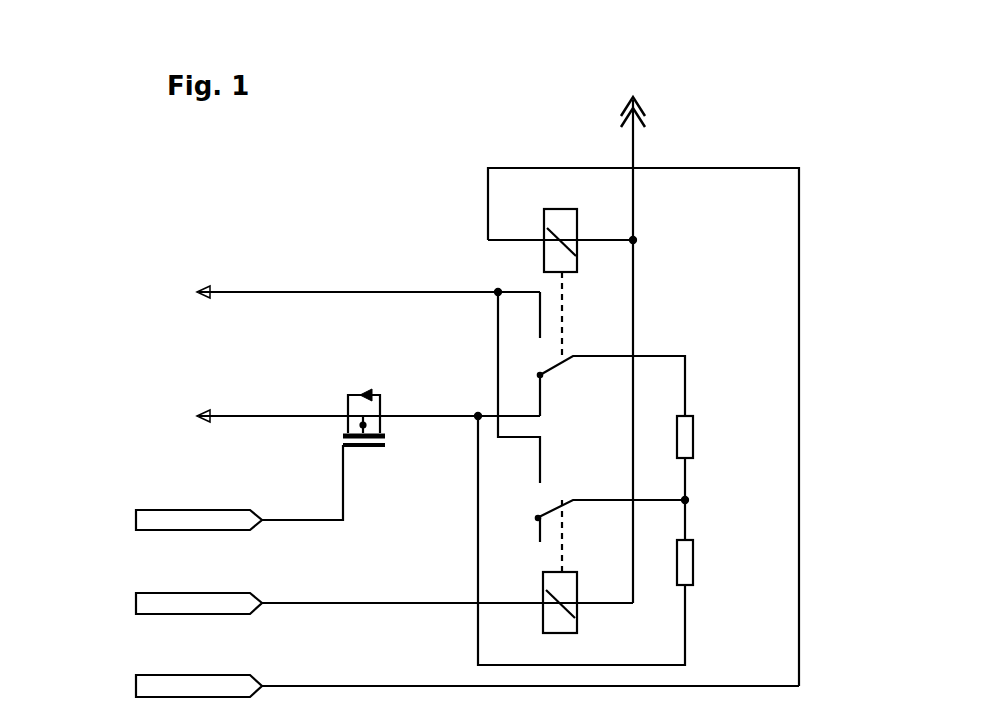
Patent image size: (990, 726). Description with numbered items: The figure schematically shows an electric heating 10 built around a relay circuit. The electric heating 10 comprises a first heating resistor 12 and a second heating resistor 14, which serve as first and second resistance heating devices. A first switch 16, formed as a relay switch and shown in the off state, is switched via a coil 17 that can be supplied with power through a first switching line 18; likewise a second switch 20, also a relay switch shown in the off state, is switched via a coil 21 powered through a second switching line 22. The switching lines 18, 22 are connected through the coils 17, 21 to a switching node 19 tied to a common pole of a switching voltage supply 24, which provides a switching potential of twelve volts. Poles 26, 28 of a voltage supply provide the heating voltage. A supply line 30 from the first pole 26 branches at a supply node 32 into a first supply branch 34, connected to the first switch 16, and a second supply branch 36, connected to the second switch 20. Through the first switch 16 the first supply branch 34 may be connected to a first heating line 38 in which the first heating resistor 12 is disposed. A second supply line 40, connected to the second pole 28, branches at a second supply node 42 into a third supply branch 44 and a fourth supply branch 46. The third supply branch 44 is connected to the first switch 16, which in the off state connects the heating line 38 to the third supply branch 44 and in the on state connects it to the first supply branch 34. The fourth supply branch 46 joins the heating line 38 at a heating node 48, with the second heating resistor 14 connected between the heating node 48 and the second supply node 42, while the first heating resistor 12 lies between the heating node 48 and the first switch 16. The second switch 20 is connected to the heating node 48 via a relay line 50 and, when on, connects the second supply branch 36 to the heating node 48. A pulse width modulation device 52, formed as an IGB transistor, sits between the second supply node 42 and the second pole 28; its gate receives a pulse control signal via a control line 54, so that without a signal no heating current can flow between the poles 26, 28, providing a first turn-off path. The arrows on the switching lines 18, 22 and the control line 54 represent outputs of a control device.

The electric heating 10 is at (868, 154).
The first heating resistor 12 is at (694, 440).
The second heating resistor 14 is at (694, 566).
The first switch 16 is at (565, 362).
The coil 17 is at (577, 213).
The first switching line 18 is at (426, 686).
The switching node 19 is at (637, 238).
The second switch 20 is at (573, 498).
The coil 21 is at (576, 607).
The second switching line 22 is at (414, 604).
The switching voltage supply 24 is at (646, 343).
The first pole 26 is at (171, 290).
The second pole 28 is at (171, 418).
The supply line 30 is at (376, 292).
The supply node 32 is at (501, 282).
The first supply branch 34 is at (528, 341).
The second supply branch 36 is at (498, 335).
The first heating line 38 is at (660, 356).
The second supply line 40 is at (291, 416).
The second supply node 42 is at (478, 413).
The third supply branch 44 is at (526, 414).
The fourth supply branch 46 is at (478, 489).
The heating node 48 is at (689, 500).
The relay line 50 is at (666, 501).
The pulse width modulation device 52 is at (376, 392).
The control line 54 is at (298, 520).